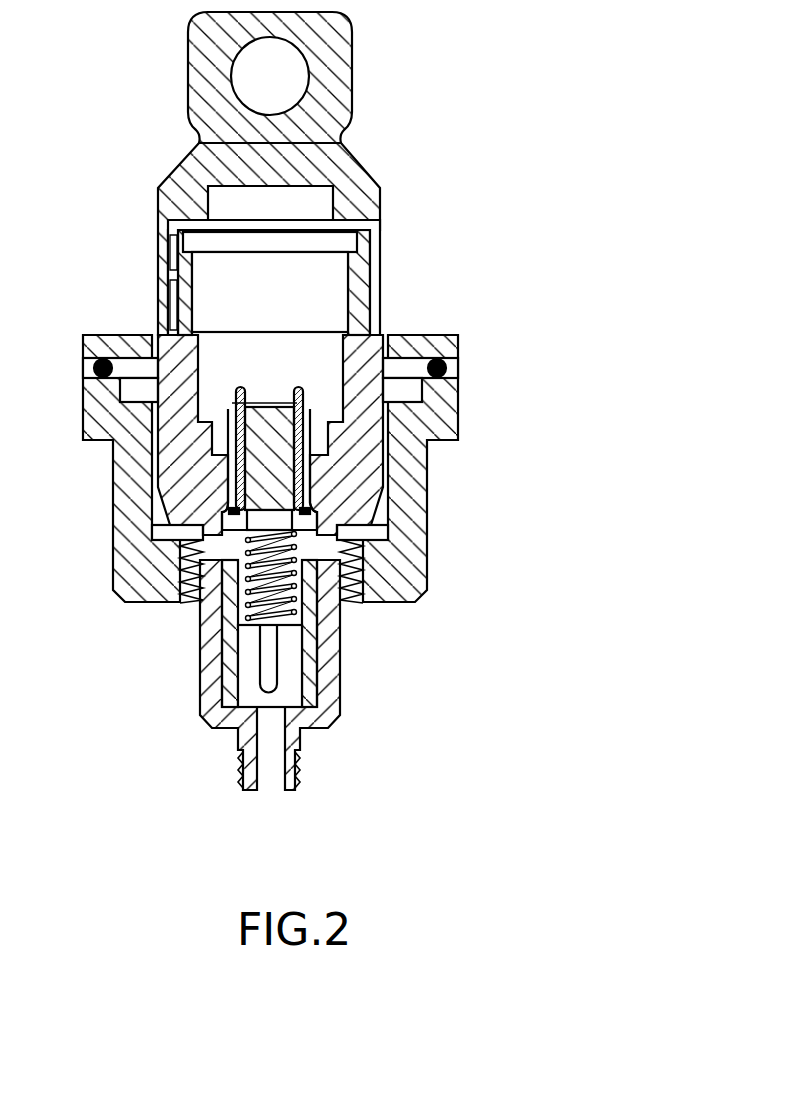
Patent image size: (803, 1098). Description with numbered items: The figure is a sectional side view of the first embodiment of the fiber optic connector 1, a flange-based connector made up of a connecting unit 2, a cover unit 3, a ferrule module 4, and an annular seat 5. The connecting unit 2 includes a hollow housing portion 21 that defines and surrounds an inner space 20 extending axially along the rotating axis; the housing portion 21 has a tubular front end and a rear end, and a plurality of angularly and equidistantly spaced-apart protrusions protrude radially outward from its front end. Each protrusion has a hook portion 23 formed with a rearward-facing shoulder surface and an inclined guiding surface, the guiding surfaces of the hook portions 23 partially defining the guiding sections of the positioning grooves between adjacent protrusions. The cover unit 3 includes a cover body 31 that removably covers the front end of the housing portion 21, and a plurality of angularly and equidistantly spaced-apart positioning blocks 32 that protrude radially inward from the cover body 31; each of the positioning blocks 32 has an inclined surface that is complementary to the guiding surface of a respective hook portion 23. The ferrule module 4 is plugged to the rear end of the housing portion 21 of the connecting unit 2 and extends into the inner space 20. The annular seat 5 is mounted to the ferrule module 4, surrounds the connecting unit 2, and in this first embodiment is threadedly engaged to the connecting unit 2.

The fiber optic connector 1 is at (323, 401).
The connecting unit 2 is at (468, 341).
The cover unit 3 is at (366, 99).
The ferrule module 4 is at (252, 470).
The annular seat 5 is at (130, 562).
The inner space 20 is at (312, 352).
The housing portion 21 is at (377, 462).
The hook portion 23 is at (175, 260).
The cover body 31 is at (380, 233).
The positioning blocks 32 is at (177, 297).